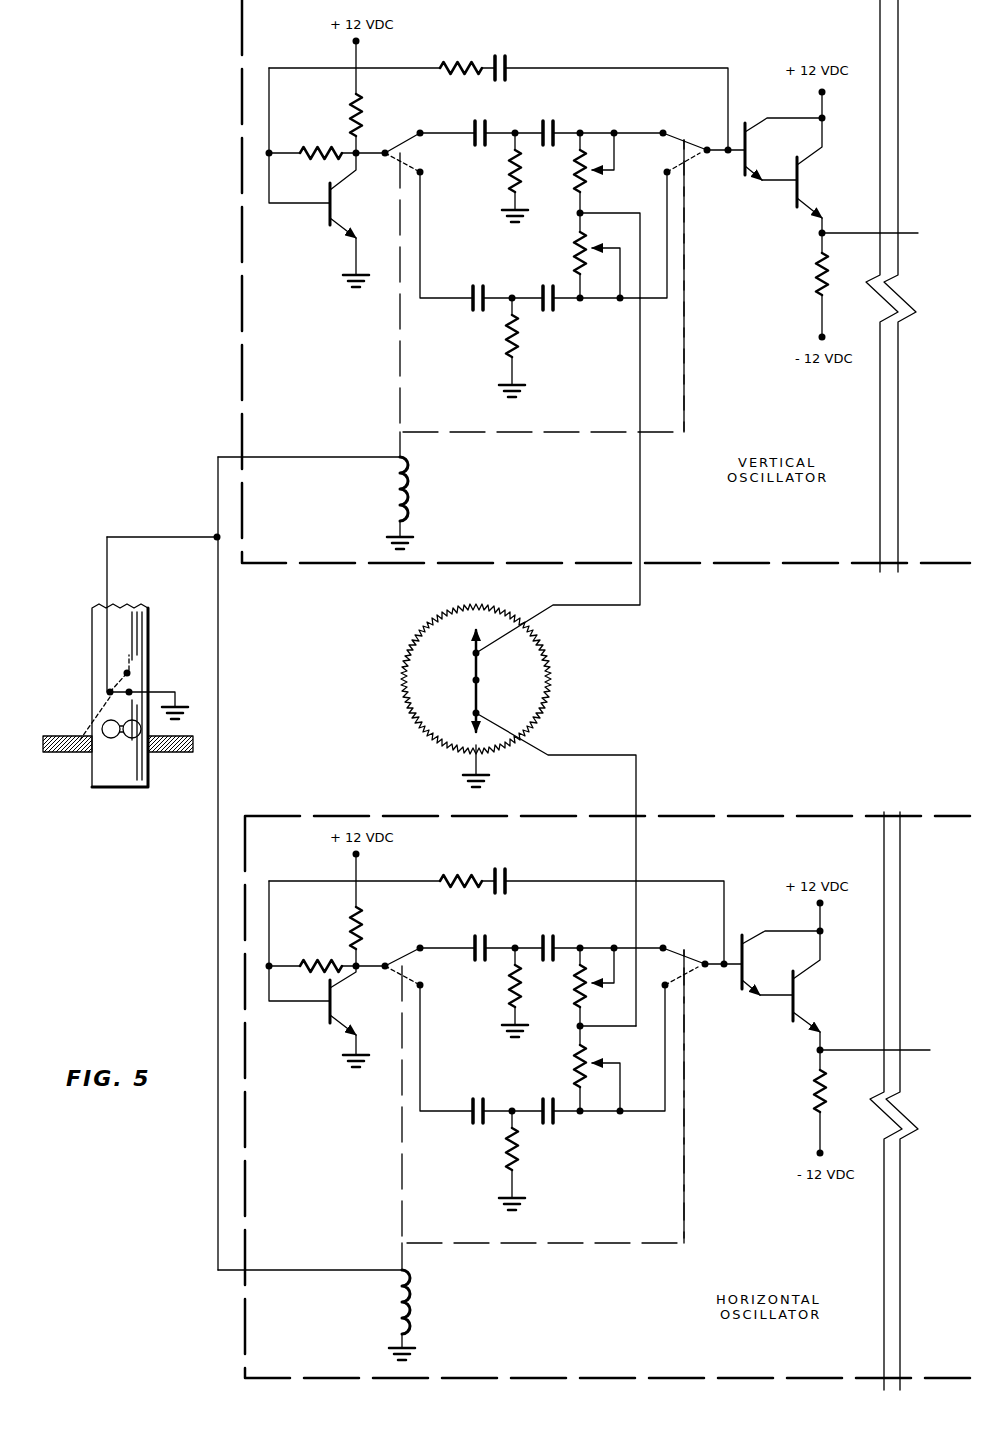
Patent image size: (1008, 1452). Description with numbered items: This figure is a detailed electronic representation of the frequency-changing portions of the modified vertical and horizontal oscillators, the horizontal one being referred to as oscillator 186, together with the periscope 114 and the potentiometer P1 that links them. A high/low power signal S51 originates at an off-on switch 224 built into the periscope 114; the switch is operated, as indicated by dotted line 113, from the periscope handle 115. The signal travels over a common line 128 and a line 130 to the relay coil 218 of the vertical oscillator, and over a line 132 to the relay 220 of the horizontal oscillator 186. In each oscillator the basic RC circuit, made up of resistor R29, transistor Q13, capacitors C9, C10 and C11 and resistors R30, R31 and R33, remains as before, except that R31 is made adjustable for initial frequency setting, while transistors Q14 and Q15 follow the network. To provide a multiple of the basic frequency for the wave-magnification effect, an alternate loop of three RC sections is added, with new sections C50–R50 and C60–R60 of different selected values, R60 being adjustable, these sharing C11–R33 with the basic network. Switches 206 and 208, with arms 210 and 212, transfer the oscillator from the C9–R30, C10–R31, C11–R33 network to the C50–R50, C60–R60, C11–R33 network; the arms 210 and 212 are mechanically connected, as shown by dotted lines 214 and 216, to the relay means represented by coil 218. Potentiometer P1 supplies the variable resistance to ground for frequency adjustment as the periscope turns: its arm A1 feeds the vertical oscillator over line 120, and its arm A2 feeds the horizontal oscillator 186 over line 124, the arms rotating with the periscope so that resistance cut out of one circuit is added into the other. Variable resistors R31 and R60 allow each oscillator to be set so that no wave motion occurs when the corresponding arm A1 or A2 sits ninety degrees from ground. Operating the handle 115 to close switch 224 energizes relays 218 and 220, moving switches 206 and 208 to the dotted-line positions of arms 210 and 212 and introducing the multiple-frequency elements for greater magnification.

The periscope 114 is at (239, 44).
The dotted line 113 is at (92, 722).
The periscope handle 115 is at (72, 751).
The line 128 is at (119, 531).
The high/low power signal S51 is at (172, 535).
The off-on switch 224 is at (146, 689).
The line 130 is at (292, 457).
The line 132 is at (218, 918).
The line 120 is at (608, 604).
The line 124 is at (612, 758).
The horizontal oscillator 186 is at (785, 814).
The switch 206 is at (391, 160).
The switch 208 is at (716, 163).
The arm 210 is at (410, 138).
The arm 212 is at (690, 138).
The dotted line 214 is at (403, 389).
The dotted line 216 is at (688, 356).
The coil 218 is at (414, 493).
The relay 220 is at (423, 1315).
The potentiometer P1 is at (400, 642).
The arm A1 is at (470, 653).
The arm A2 is at (470, 716).
The resistor R29 is at (360, 103).
The resistor R30 is at (508, 180).
The variable resistor R31 is at (572, 179).
The resistor R33 is at (461, 466).
The resistor R50 is at (519, 353).
The variable resistor R60 is at (564, 242).
The capacitor C9 is at (493, 122).
The capacitor C10 is at (535, 126).
The capacitor C11 is at (509, 465).
The capacitor C50 is at (474, 288).
The capacitor C60 is at (558, 289).
The transistor Q13 is at (349, 610).
The transistor Q14 is at (782, 556).
The transistor Q15 is at (811, 594).